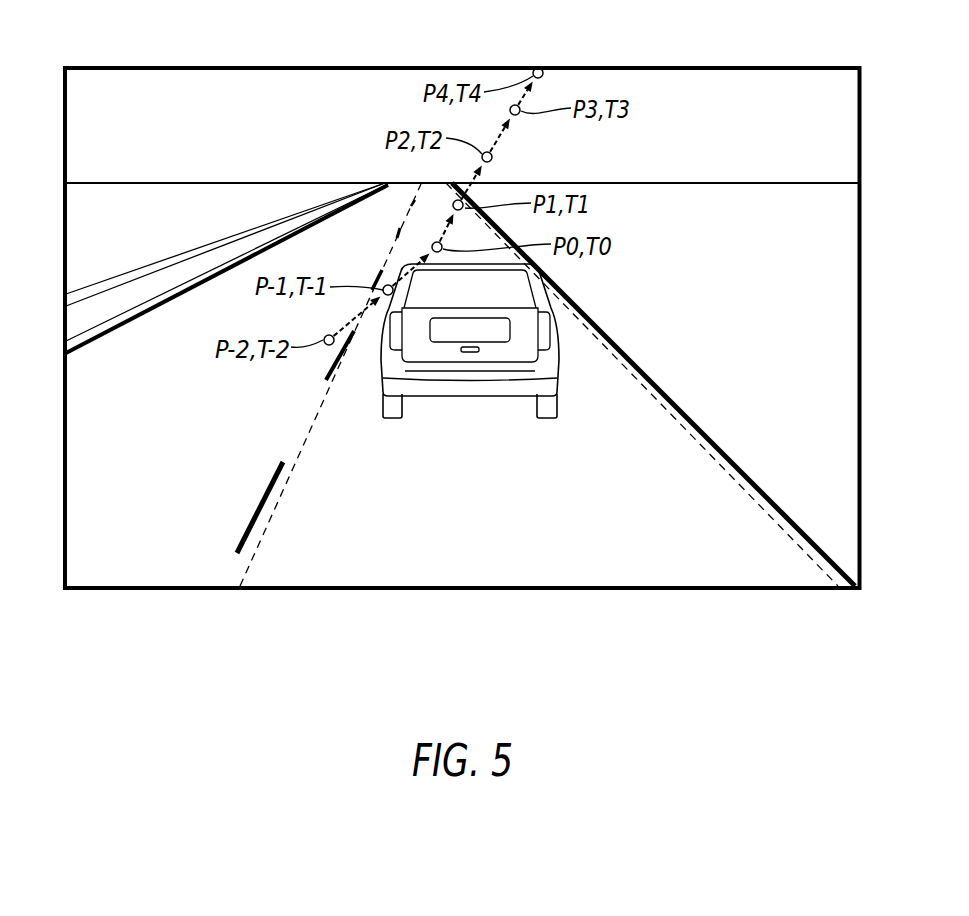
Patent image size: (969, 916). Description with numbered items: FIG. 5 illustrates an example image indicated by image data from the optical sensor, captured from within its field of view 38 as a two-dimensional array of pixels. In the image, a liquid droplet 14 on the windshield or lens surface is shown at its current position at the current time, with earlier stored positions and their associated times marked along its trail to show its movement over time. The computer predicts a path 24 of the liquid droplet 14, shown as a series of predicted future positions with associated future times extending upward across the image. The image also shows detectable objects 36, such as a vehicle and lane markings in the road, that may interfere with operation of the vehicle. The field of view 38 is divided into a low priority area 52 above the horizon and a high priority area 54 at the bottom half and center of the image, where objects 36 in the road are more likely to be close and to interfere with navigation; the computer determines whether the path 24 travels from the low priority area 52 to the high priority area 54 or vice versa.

The liquid droplet 14 is at (434, 243).
The path 24 is at (500, 148).
The detectable objects 36 is at (396, 236).
The field of view 38 is at (96, 66).
The low priority area 52 is at (735, 100).
The high priority area 54 is at (622, 403).